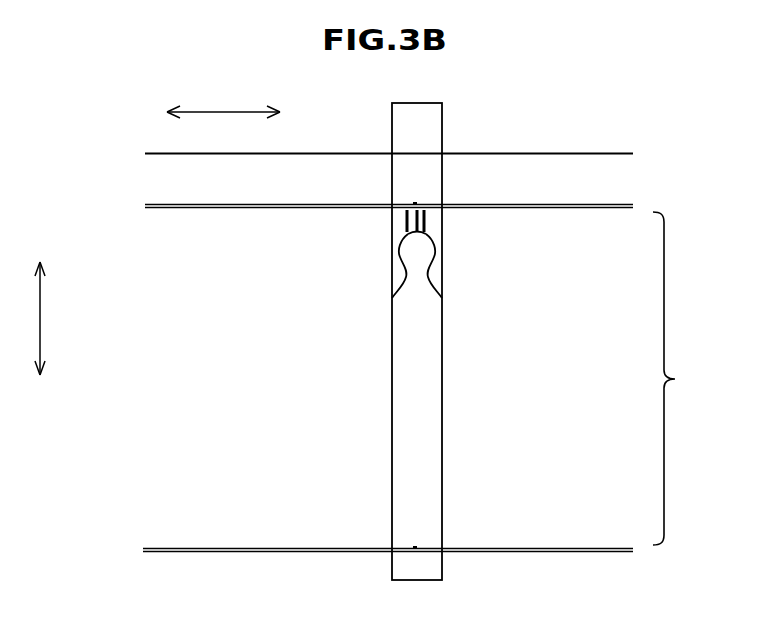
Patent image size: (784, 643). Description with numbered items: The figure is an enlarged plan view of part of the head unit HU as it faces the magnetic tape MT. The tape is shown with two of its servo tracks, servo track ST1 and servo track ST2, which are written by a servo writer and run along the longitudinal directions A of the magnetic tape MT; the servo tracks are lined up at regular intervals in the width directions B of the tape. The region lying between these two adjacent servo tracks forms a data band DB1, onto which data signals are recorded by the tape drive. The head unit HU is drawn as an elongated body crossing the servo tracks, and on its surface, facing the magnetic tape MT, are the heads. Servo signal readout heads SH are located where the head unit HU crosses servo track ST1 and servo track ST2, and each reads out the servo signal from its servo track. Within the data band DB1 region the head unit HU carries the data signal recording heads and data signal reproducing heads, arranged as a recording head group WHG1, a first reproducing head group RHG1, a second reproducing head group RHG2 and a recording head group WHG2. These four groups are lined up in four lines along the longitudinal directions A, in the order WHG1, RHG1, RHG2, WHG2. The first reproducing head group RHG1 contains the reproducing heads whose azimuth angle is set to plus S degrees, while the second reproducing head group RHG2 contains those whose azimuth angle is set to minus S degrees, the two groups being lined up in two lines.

The magnetic tape MT is at (598, 127).
The head unit HU is at (448, 123).
The servo track ST1 is at (355, 206).
The servo track ST2 is at (355, 553).
The servo signal readout head SH is at (415, 205).
The recording head group WHG1 is at (426, 222).
The recording head group WHG2 is at (405, 229).
The first reproducing head group RHG1 is at (393, 298).
The second reproducing head group RHG2 is at (441, 298).
The data band DB1 is at (689, 378).
The longitudinal directions A is at (223, 98).
The width directions B is at (28, 318).